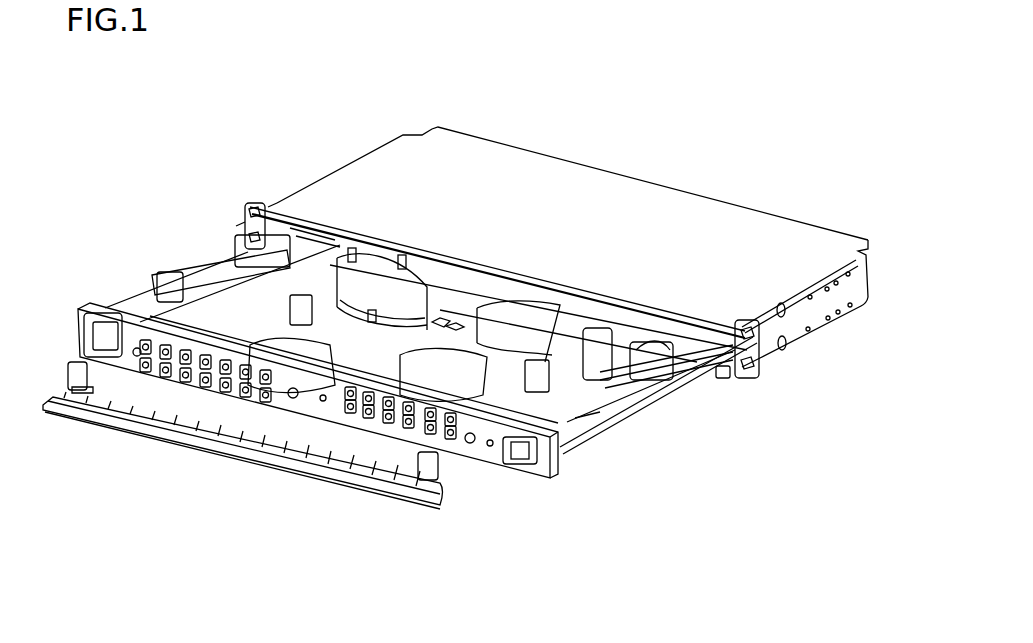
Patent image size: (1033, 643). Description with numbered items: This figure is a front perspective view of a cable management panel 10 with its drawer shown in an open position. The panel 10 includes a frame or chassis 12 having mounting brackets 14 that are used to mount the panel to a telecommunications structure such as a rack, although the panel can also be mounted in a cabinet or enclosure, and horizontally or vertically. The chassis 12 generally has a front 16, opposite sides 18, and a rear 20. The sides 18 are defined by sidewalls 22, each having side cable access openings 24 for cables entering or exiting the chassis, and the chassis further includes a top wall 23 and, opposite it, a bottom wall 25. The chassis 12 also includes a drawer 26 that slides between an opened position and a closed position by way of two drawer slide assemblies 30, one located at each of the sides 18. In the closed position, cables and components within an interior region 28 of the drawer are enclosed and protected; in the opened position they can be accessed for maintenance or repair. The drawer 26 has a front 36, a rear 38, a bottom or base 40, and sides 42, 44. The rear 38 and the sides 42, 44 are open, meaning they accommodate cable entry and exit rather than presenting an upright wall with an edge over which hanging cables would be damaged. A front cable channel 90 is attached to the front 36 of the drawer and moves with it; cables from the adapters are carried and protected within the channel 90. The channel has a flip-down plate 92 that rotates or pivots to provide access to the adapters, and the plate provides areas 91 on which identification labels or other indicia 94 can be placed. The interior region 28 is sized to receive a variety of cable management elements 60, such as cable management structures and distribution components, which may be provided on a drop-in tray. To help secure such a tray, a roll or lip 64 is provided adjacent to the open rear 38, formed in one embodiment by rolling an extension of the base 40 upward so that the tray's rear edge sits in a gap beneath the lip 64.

The cable management panel 10 is at (520, 287).
The chassis 12 is at (531, 165).
The mounting brackets 14 is at (253, 200).
The front 16 is at (394, 389).
The sides 18 is at (295, 126).
The rear 20 is at (607, 138).
The sidewalls 22 is at (820, 310).
The top wall 23 is at (783, 230).
The side cable access openings 24 is at (240, 228).
The bottom wall 25 is at (580, 327).
The drawer 26 is at (605, 450).
The interior region 28 is at (521, 372).
The drawer slide assemblies 30 is at (313, 238).
The front 36 is at (510, 487).
The rear 38 is at (432, 282).
The base 40 is at (470, 310).
The side 42 is at (168, 313).
The side 44 is at (575, 418).
The cable management elements 60 is at (372, 310).
The lip 64 is at (440, 328).
The front cable channel 90 is at (62, 385).
The areas 91 is at (210, 438).
The flip-down plate 92 is at (312, 482).
The identification labels 94 is at (143, 420).